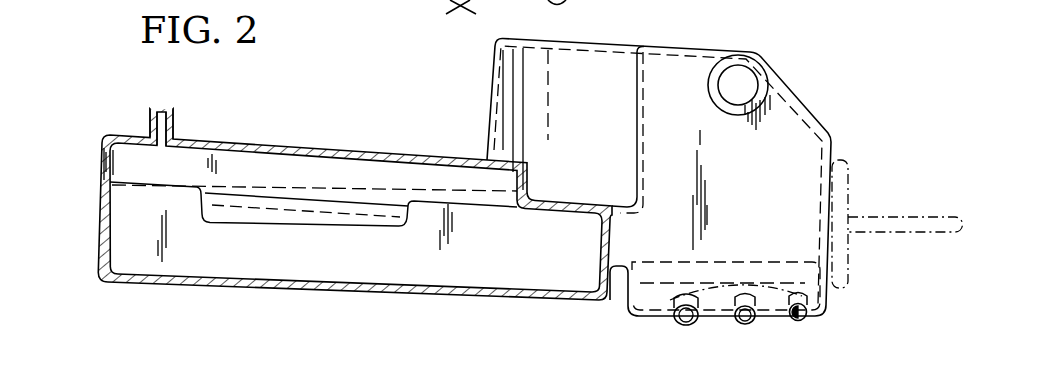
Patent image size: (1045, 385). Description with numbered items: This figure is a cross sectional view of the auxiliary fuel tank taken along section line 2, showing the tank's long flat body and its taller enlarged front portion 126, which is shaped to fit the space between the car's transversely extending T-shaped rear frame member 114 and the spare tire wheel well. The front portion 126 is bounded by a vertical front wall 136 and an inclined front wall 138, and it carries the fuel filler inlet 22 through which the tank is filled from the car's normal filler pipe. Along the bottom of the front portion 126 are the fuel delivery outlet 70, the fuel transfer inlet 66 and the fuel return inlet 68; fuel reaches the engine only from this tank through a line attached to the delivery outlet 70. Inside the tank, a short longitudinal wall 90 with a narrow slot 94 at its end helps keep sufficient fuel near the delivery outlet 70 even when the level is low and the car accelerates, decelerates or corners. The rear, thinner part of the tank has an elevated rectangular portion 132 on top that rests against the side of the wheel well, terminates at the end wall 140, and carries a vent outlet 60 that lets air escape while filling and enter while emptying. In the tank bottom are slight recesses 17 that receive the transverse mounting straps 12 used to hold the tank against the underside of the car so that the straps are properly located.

The section line 2 is at (493, 15).
The transverse mounting straps 12 is at (215, 288).
The recesses 17 is at (213, 282).
The elevated rectangular portion 132 is at (340, 146).
The wall 140 is at (100, 211).
The vent outlet 60 is at (176, 124).
The enlarged front portion 126 is at (752, 186).
The fuel filler inlet 22 is at (725, 112).
The inclined front wall 138 is at (788, 82).
The vertical front wall 136 is at (833, 154).
The rear frame member 114 is at (870, 226).
The narrow slot 94 is at (634, 272).
The longitudinal wall 90 is at (670, 268).
The fuel delivery outlet 70 is at (690, 325).
The fuel transfer inlet 66 is at (748, 324).
The fuel return inlet 68 is at (800, 321).